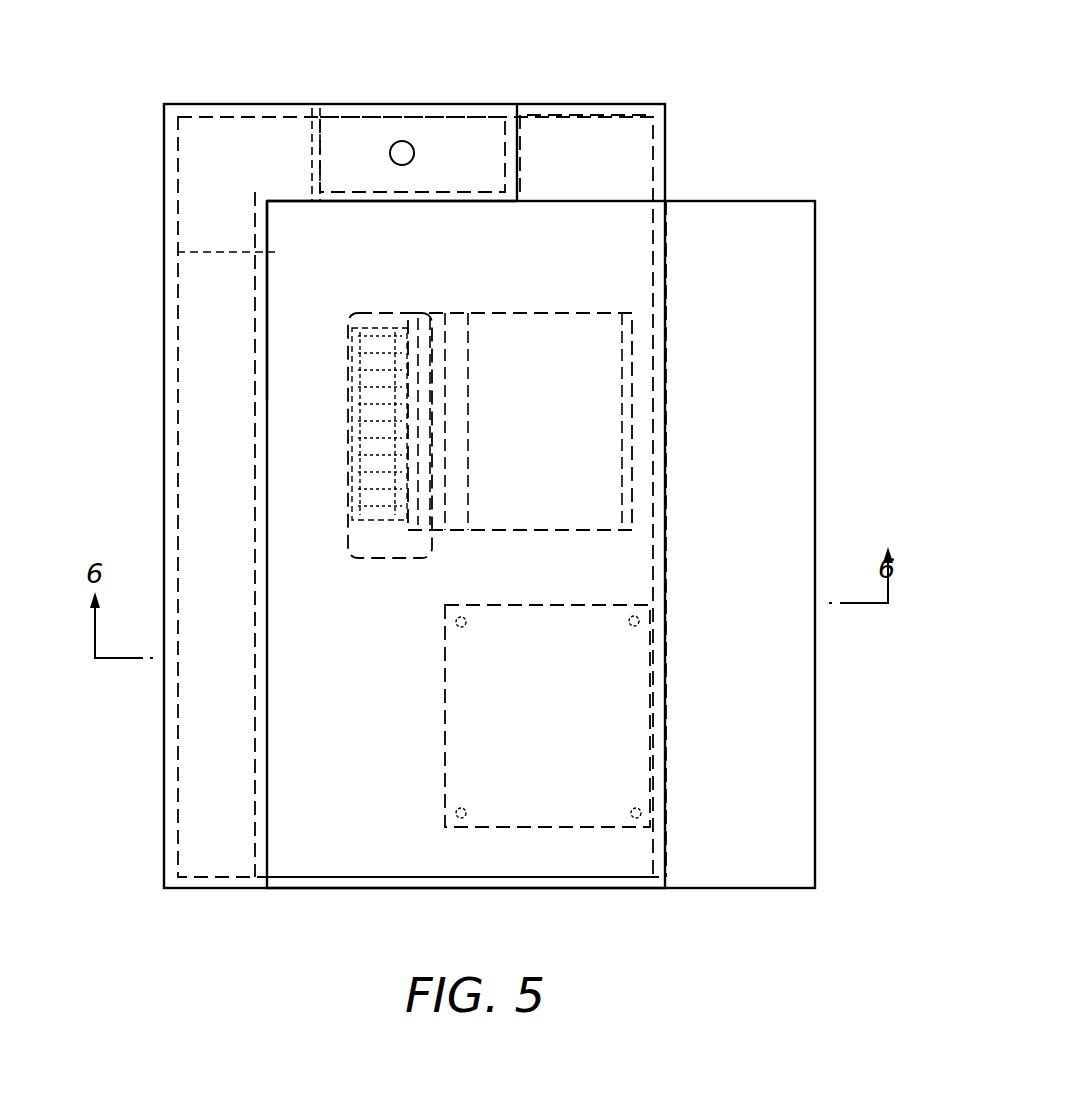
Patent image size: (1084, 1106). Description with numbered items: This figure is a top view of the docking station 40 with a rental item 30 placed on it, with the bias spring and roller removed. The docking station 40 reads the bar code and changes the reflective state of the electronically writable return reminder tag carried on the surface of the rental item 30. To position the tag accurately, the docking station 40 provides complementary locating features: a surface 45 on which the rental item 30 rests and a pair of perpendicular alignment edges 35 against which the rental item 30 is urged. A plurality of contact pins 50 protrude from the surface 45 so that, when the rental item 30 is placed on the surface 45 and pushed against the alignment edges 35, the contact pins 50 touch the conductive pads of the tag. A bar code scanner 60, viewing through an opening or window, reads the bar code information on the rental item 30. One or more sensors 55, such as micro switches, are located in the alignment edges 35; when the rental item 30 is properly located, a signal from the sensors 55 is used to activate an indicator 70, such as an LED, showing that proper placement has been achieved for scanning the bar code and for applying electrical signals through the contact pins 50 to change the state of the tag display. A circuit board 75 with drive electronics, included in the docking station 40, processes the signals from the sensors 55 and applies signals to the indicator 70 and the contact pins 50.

The rental item 30 is at (815, 252).
The alignment edges 35 is at (358, 203).
The docking station 40 is at (253, 103).
The surface 45 is at (630, 155).
The contact pins 50 is at (350, 510).
The sensors 55 is at (312, 173).
The bar code scanner 60 is at (633, 388).
The indicator 70 is at (405, 141).
The circuit board 75 is at (593, 827).